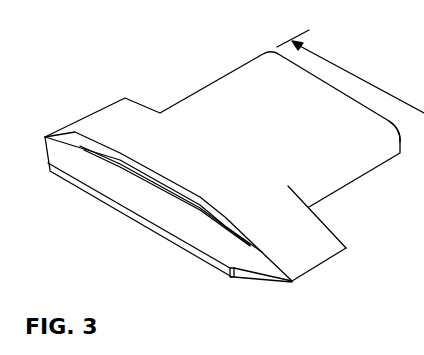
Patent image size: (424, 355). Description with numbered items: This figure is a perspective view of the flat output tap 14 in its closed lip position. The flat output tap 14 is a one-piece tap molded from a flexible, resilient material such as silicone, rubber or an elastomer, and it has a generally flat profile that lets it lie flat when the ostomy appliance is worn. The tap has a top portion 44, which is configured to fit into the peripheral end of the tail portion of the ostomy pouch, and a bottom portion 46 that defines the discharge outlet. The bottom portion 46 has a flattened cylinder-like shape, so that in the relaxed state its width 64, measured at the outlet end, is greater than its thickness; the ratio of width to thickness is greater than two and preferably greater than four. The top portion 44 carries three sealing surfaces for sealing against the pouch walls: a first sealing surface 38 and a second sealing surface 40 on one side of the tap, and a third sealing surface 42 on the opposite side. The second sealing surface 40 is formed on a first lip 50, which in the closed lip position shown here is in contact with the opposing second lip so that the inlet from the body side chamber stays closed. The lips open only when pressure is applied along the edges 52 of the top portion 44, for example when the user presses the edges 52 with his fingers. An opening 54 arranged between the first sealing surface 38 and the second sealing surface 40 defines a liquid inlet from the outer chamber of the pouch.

The flat output tap 14 is at (178, 57).
The first sealing surface 38 is at (289, 233).
The second sealing surface 40 is at (223, 248).
The third sealing surface 42 is at (192, 252).
The top portion 44 is at (118, 113).
The bottom portion 46 is at (380, 133).
The first lip 50 is at (104, 183).
The edges 52 is at (318, 268).
The opening 54 is at (173, 195).
The width 64 is at (363, 76).